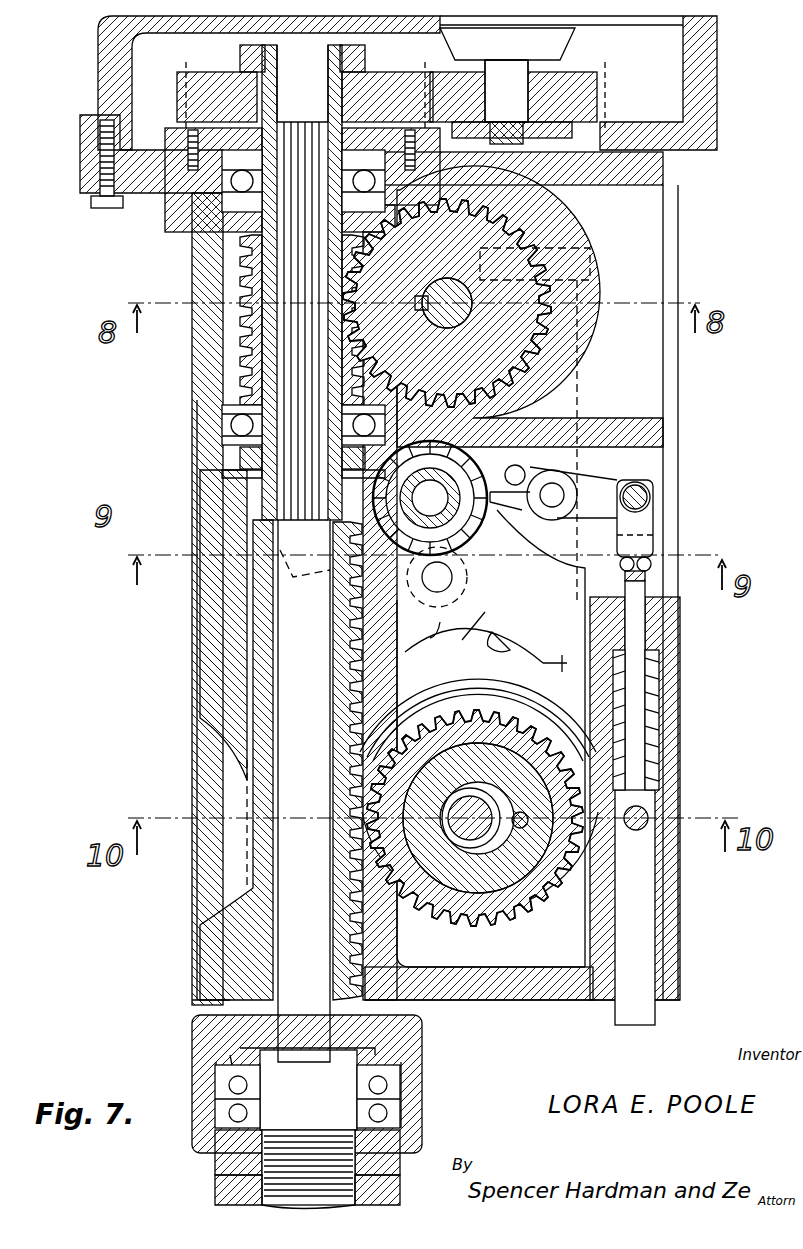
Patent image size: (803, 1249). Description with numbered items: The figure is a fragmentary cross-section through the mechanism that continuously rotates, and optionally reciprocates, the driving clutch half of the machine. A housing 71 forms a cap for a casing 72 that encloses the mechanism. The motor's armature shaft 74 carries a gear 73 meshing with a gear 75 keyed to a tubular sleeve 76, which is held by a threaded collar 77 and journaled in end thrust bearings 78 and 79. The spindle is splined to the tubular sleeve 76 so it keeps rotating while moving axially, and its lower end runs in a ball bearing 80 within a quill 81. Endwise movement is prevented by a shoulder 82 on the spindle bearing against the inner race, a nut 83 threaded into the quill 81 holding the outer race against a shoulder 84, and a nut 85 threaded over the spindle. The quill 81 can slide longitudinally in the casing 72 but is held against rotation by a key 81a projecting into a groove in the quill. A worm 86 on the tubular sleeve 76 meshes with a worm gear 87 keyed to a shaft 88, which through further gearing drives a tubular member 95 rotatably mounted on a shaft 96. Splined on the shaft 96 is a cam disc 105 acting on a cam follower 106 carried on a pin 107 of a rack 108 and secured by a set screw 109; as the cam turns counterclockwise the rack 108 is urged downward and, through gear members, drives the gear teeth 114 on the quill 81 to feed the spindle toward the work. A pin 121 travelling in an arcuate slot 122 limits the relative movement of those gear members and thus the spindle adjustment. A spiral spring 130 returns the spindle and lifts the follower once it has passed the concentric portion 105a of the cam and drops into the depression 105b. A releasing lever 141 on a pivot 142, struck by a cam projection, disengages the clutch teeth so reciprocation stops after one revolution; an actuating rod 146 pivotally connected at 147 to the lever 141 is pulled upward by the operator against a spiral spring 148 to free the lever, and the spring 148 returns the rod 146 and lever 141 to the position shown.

The housing 71 is at (98, 73).
The casing 72 is at (205, 385).
The gear 73 is at (578, 88).
The armature shaft 74 is at (513, 72).
The gear 75 is at (392, 72).
The tubular sleeve 76 is at (270, 130).
The collar 77 is at (243, 48).
The end thrust bearing 78 is at (193, 218).
The end thrust bearing 79 is at (240, 422).
The ball bearing 80 is at (225, 1100).
The quill 81 is at (270, 665).
The key 81a is at (210, 745).
The shoulder 82 is at (260, 1060).
The nut 83 is at (218, 1152).
The shoulder 84 is at (225, 1068).
The nut 85 is at (228, 1190).
The worm 86 is at (245, 270).
The worm gear 87 is at (518, 240).
The shaft 88 is at (540, 320).
The tubular member 95 is at (490, 438).
The shaft 96 is at (455, 520).
The cam disc 105 is at (474, 650).
The concentric portion 105a is at (505, 638).
The depression 105b is at (462, 640).
The cam follower 106 is at (432, 642).
The pin 107 is at (440, 577).
The rack 108 is at (560, 671).
The set screw 109 is at (350, 584).
The gear teeth 114 is at (350, 705).
The pin 121 is at (475, 818).
The arcuate slot 122 is at (503, 682).
The spiral spring 130 is at (545, 915).
The releasing lever 141 is at (610, 485).
The pivot 142 is at (555, 520).
The actuating rod 146 is at (645, 908).
The pivotal connection 147 is at (650, 503).
The spiral spring 148 is at (655, 690).